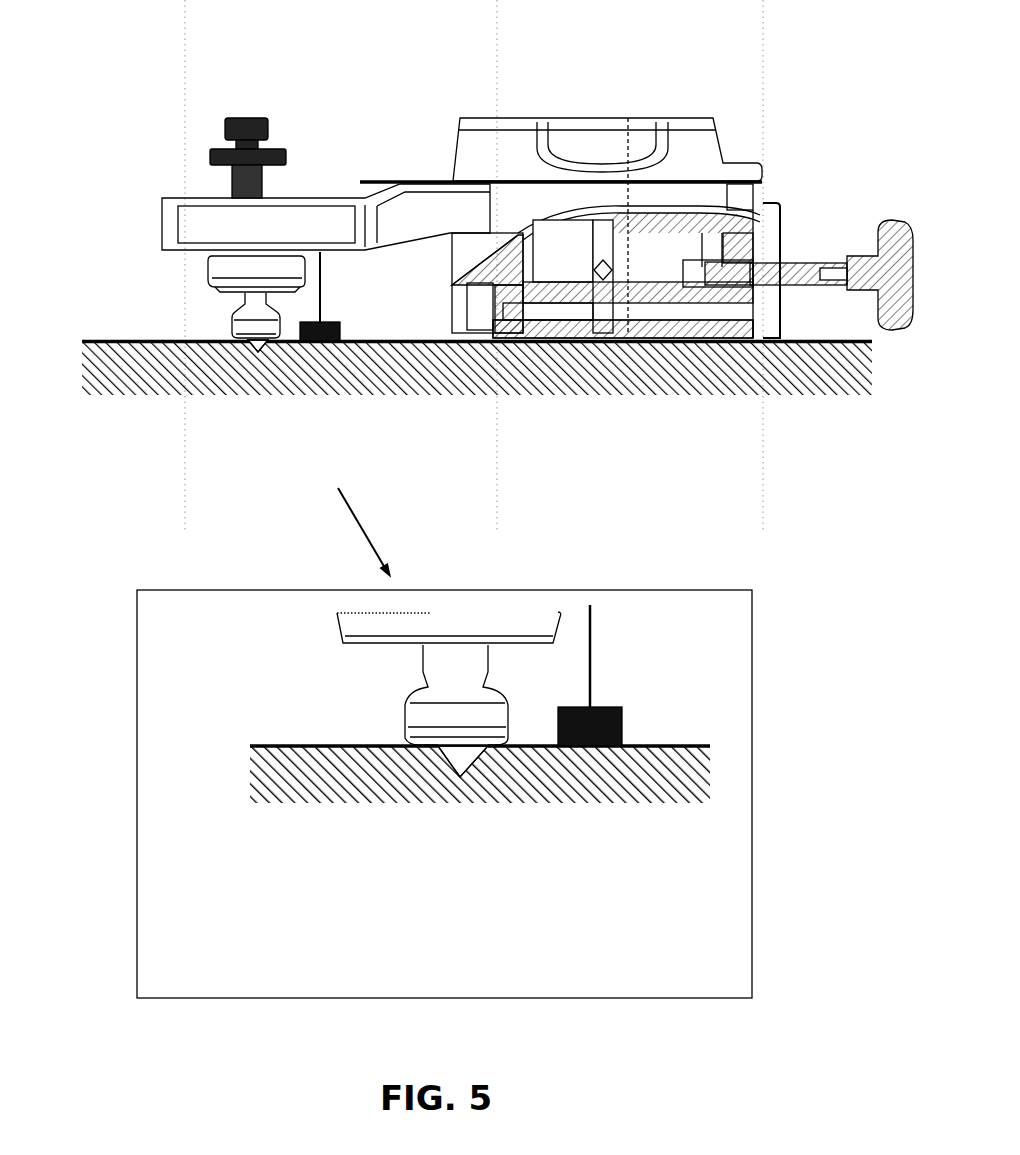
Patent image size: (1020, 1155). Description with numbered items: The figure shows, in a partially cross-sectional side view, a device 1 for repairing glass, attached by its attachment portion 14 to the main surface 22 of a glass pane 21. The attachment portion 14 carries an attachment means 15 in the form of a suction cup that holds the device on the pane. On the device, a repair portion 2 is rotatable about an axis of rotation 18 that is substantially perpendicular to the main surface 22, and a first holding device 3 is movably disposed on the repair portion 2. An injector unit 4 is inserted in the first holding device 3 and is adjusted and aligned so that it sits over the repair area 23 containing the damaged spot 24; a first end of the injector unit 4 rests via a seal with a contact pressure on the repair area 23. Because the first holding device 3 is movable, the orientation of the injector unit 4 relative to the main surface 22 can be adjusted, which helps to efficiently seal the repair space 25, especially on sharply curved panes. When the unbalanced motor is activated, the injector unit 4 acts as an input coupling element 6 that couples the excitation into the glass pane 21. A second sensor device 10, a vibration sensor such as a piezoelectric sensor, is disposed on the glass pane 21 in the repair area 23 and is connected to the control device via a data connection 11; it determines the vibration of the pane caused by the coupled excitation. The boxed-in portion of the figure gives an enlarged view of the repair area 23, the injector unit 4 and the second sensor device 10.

The device 1 is at (358, 85).
The repair portion 2 is at (85, 108).
The first holding device 3 is at (225, 277).
The injector unit 4 is at (307, 535).
The input coupling element 6 is at (232, 322).
The second sensor device 10 is at (345, 326).
The data connection 11 is at (330, 276).
The attachment portion 14 is at (781, 238).
The attachment means 15 is at (658, 345).
The axis of rotation 18 is at (630, 132).
The glass pane 21 is at (477, 566).
The main surface 22 is at (840, 344).
The repair area 23 is at (195, 447).
The damaged spot 24 is at (255, 344).
The repair space 25 is at (263, 350).